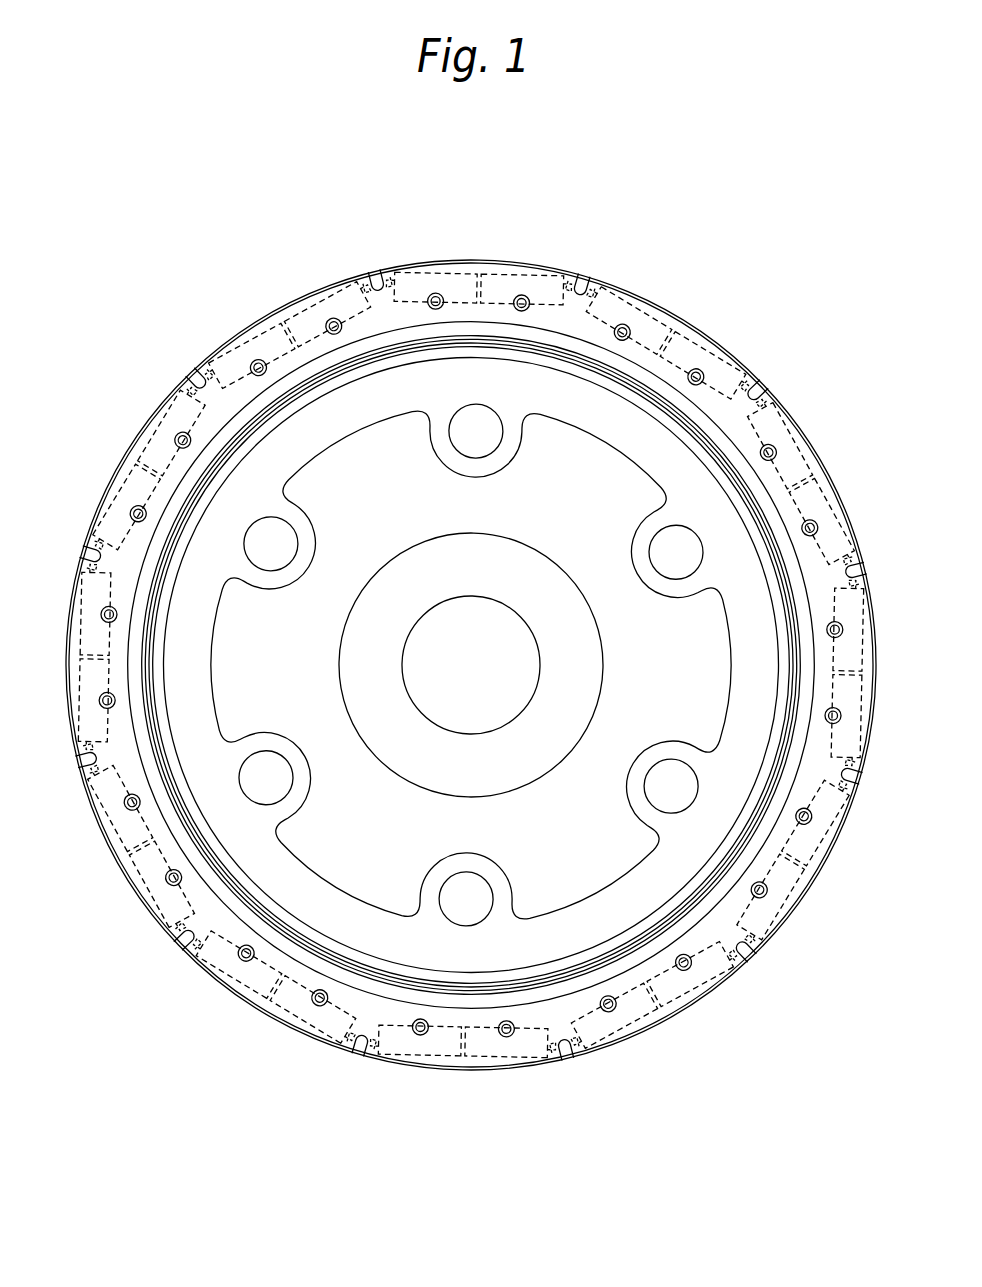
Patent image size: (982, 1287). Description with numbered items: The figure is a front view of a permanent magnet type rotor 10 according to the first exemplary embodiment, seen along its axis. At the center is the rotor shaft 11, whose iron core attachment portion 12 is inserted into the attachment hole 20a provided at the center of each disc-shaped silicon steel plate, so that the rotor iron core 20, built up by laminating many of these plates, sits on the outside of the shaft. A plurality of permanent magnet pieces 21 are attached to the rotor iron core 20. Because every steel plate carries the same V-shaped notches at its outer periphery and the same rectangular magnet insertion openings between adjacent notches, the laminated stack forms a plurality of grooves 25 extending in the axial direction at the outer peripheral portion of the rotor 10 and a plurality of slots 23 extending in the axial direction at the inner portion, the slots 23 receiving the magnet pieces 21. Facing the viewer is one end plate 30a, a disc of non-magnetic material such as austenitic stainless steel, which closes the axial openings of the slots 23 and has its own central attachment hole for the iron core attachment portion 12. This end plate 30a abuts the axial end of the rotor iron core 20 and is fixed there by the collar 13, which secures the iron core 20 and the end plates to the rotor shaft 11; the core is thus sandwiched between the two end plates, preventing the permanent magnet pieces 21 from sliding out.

The permanent magnet type rotor 10 is at (471, 623).
The rotor shaft 11 is at (520, 762).
The iron core attachment portion 12 is at (222, 873).
The collar 13 is at (167, 820).
The rotor iron core 20 is at (806, 914).
The attachment hole 20a is at (752, 823).
The permanent magnet pieces 21 is at (522, 283).
The slots 23 is at (318, 310).
The grooves 25 is at (197, 388).
The end plate 30a is at (747, 433).